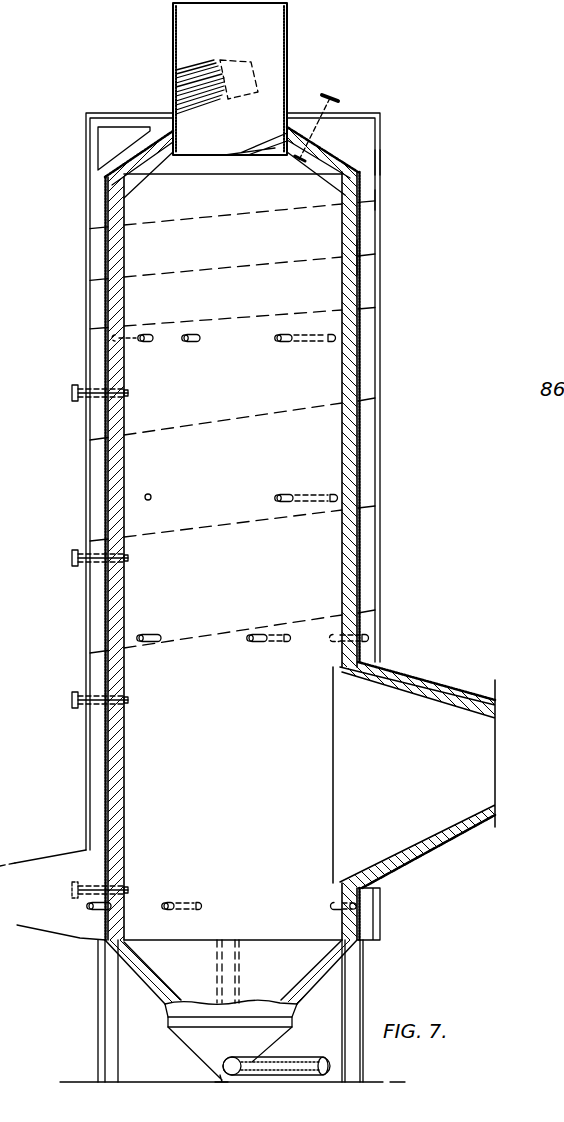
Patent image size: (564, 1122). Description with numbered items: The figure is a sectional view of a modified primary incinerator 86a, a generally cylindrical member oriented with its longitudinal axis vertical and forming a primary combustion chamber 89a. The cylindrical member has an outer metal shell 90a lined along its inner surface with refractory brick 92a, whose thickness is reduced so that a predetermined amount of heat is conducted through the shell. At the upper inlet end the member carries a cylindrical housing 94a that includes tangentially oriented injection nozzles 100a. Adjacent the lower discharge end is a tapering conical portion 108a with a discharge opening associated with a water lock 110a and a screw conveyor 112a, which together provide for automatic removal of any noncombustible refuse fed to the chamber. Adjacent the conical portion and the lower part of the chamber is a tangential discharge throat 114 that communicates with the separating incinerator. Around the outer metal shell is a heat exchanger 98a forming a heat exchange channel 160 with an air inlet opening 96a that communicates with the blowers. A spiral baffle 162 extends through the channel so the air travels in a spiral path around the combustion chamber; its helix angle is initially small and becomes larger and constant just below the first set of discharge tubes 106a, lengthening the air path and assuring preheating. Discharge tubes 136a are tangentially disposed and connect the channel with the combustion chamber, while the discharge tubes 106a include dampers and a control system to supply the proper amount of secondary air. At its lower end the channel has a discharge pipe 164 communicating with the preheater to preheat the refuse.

The primary incinerator 86a is at (355, 118).
The cylindrical housing 94a is at (290, 53).
The air inlet opening 96a is at (110, 140).
The heat exchanger 98a is at (381, 162).
The injection nozzles 100a is at (222, 75).
The heat exchange channel 160 is at (366, 196).
The spiral baffle 162 is at (366, 258).
The outer metal shell 90a is at (358, 306).
The refractory brick 92a is at (348, 377).
The primary combustion chamber 89a is at (232, 570).
The discharge tubes 106a is at (128, 337).
The discharge tubes 136a is at (72, 393).
The discharge pipe 164 is at (48, 858).
The tangential discharge throat 114 is at (415, 705).
The tapering conical portion 108a is at (300, 990).
The water lock 110a is at (215, 1047).
The screw conveyor 112a is at (310, 1057).